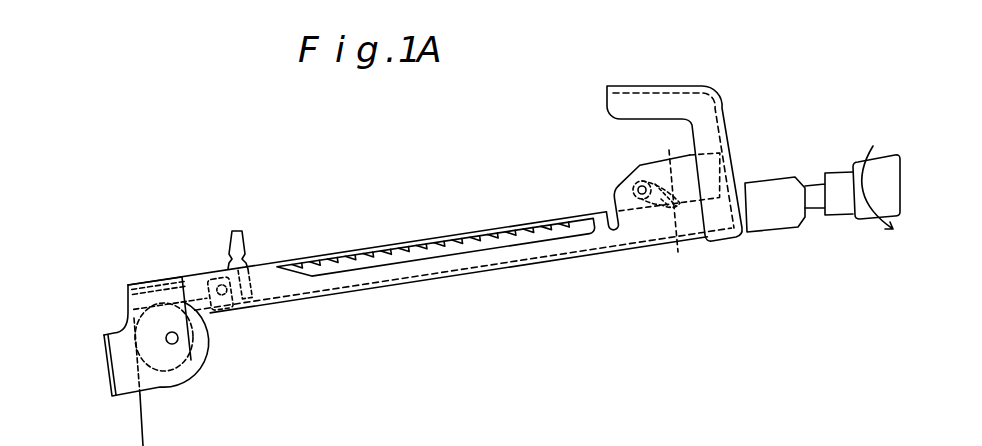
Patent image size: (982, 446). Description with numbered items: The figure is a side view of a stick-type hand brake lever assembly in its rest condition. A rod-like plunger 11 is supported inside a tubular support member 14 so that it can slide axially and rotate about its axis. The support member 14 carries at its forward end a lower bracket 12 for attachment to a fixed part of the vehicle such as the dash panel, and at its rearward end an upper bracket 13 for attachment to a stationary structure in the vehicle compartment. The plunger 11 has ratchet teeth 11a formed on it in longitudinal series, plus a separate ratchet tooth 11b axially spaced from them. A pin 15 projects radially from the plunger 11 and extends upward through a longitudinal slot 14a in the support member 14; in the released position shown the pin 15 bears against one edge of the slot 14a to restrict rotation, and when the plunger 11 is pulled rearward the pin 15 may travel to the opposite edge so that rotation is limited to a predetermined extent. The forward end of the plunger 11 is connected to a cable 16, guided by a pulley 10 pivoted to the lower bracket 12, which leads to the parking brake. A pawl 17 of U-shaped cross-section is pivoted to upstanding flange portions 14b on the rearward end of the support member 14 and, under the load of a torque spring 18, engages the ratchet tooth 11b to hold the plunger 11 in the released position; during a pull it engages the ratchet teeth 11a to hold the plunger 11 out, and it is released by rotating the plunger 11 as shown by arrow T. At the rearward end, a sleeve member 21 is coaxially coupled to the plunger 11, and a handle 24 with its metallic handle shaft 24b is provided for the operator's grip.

The pulley 10 is at (200, 342).
The plunger 11 is at (390, 247).
The ratchet teeth 11a is at (462, 242).
The ratchet tooth 11b is at (683, 214).
The lower bracket 12 is at (146, 298).
The upper bracket 13 is at (684, 98).
The tubular support member 14 is at (357, 277).
The longitudinal slot 14a is at (470, 248).
The upstanding flange portions 14b is at (618, 200).
The pin 15 is at (242, 240).
The cable 16 is at (143, 437).
The pawl 17 is at (669, 170).
The torque spring 18 is at (635, 163).
The sleeve member 21 is at (775, 192).
The handle 24 is at (889, 181).
The metallic handle shaft 24b is at (822, 207).
The arrow T is at (889, 198).